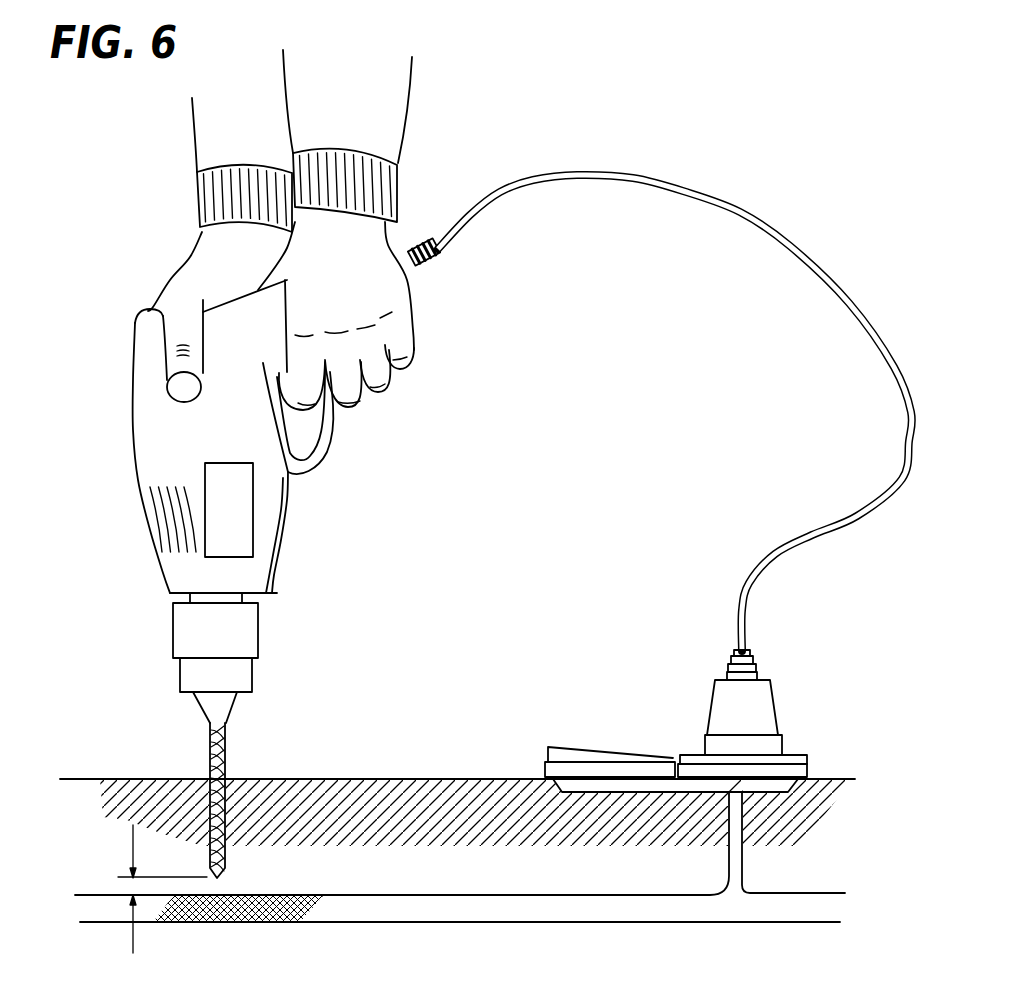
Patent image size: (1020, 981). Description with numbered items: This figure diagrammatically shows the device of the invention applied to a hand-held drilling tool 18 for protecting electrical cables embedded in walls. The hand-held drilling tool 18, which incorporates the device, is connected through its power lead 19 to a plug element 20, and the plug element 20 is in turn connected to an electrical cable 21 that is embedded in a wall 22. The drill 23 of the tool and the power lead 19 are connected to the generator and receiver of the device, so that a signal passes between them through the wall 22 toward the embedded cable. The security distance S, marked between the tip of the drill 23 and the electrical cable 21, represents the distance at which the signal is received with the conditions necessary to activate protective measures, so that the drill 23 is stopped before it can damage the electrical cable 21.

The hand-held drilling tool 18 is at (163, 433).
The power lead 19 is at (667, 177).
The plug element 20 is at (732, 710).
The electrical cable 21 is at (462, 910).
The wall 22 is at (415, 795).
The drill 23 is at (207, 760).
The security distance S is at (156, 887).